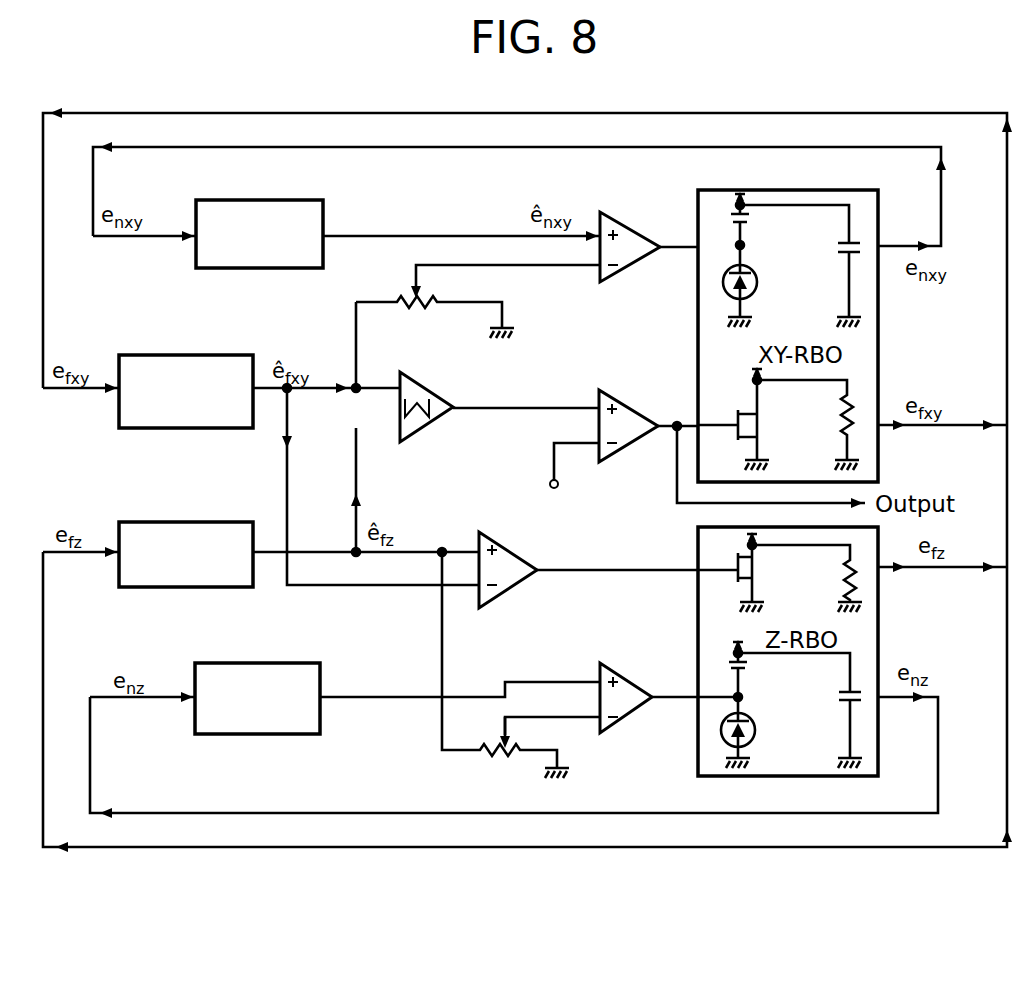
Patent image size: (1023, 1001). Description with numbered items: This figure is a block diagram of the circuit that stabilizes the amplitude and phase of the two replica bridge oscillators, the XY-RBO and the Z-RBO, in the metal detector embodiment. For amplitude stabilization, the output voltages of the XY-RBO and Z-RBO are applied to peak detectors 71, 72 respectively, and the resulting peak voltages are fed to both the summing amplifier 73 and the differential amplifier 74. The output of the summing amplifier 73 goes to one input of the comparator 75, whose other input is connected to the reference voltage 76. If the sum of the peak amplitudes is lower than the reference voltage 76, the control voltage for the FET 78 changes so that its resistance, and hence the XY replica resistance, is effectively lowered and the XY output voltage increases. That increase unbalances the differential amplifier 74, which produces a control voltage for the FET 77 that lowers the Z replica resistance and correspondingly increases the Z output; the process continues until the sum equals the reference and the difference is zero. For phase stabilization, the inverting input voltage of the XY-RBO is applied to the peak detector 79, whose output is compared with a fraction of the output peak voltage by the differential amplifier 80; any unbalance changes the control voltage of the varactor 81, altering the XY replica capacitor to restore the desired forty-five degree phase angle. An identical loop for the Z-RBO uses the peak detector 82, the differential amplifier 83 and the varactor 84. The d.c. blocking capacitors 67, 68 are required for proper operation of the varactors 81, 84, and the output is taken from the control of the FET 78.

The d.c. blocking capacitor 67 is at (733, 216).
The d.c. blocking capacitor 68 is at (729, 662).
The peak detector 71 is at (209, 361).
The peak detector 72 is at (209, 523).
The summing amplifier 73 is at (422, 397).
The differential amplifier 74 is at (512, 590).
The comparator 75 is at (623, 415).
The reference voltage 76 is at (548, 481).
The FET 77 is at (757, 586).
The FET 78 is at (762, 422).
The peak detector 79 is at (293, 211).
The differential amplifier 80 is at (632, 238).
The varactor 81 is at (751, 273).
The peak detector 82 is at (282, 671).
The differential amplifier 83 is at (626, 677).
The varactor 84 is at (746, 724).